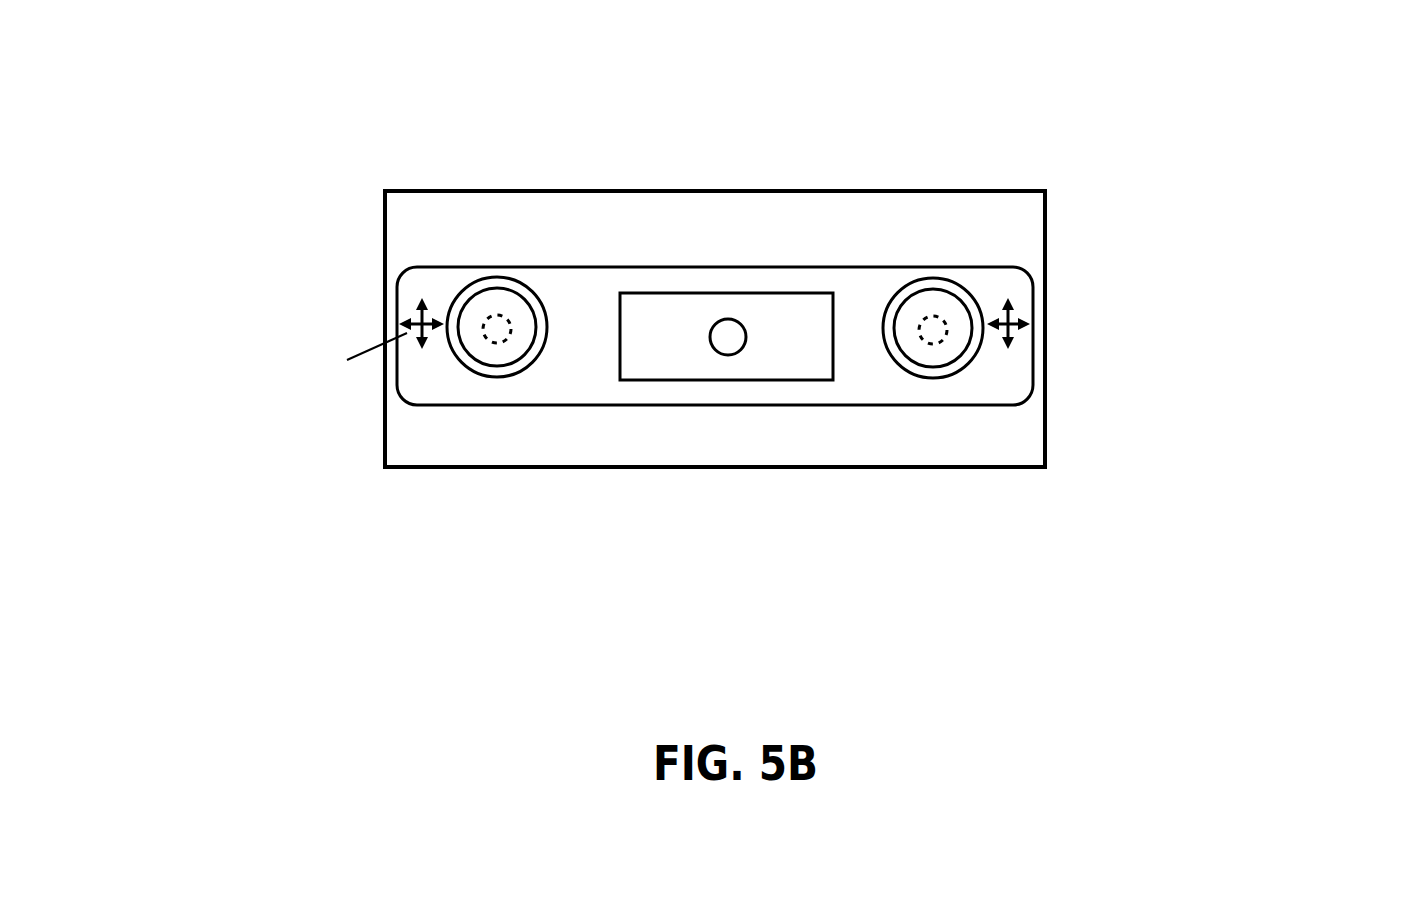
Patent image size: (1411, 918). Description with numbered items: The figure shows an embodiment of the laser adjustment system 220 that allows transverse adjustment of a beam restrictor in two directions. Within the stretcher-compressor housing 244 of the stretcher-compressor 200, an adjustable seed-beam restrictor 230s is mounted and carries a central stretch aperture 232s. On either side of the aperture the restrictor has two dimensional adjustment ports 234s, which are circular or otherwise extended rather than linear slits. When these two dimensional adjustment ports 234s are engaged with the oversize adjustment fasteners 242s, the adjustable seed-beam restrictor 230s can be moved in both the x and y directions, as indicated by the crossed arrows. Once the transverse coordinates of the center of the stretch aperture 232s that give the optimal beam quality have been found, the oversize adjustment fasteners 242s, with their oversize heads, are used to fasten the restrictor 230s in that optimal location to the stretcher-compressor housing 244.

The laser adjustment system 220 is at (398, 523).
The stretcher-compressor housing 244 is at (1045, 328).
The adjustable seed-beam restrictor 230s is at (433, 268).
The oversize adjustment fasteners 242s is at (547, 347).
The 2D adjustment ports 234s is at (930, 295).
The stretcher-compressor 200 is at (672, 308).
The stretch aperture 232s is at (733, 318).